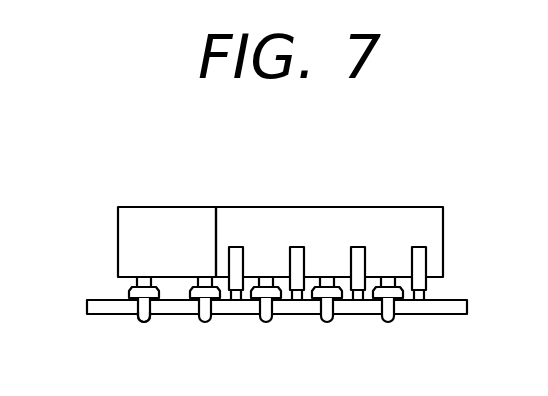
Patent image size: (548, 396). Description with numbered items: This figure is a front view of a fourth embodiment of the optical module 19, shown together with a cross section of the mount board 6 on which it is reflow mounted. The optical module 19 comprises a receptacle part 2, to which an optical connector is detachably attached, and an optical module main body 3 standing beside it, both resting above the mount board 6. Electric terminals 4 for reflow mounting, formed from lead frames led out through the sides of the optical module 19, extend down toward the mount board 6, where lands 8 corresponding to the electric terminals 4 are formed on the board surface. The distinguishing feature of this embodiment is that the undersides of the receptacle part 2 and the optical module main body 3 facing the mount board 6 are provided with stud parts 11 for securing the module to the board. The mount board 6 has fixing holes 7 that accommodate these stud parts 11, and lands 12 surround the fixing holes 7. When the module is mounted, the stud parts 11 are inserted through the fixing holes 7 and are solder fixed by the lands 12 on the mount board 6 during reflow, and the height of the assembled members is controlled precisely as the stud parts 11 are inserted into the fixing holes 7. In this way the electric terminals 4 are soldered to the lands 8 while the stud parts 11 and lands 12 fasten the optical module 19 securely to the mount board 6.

The optical module 19 is at (257, 143).
The receptacle part 2 is at (143, 212).
The optical module main body 3 is at (249, 212).
The electric terminals 4 is at (420, 258).
The mount board 6 is at (100, 305).
The fixing holes 7 is at (152, 303).
The lands 8 is at (424, 302).
The stud parts 11 is at (140, 318).
The lands 12 is at (132, 297).